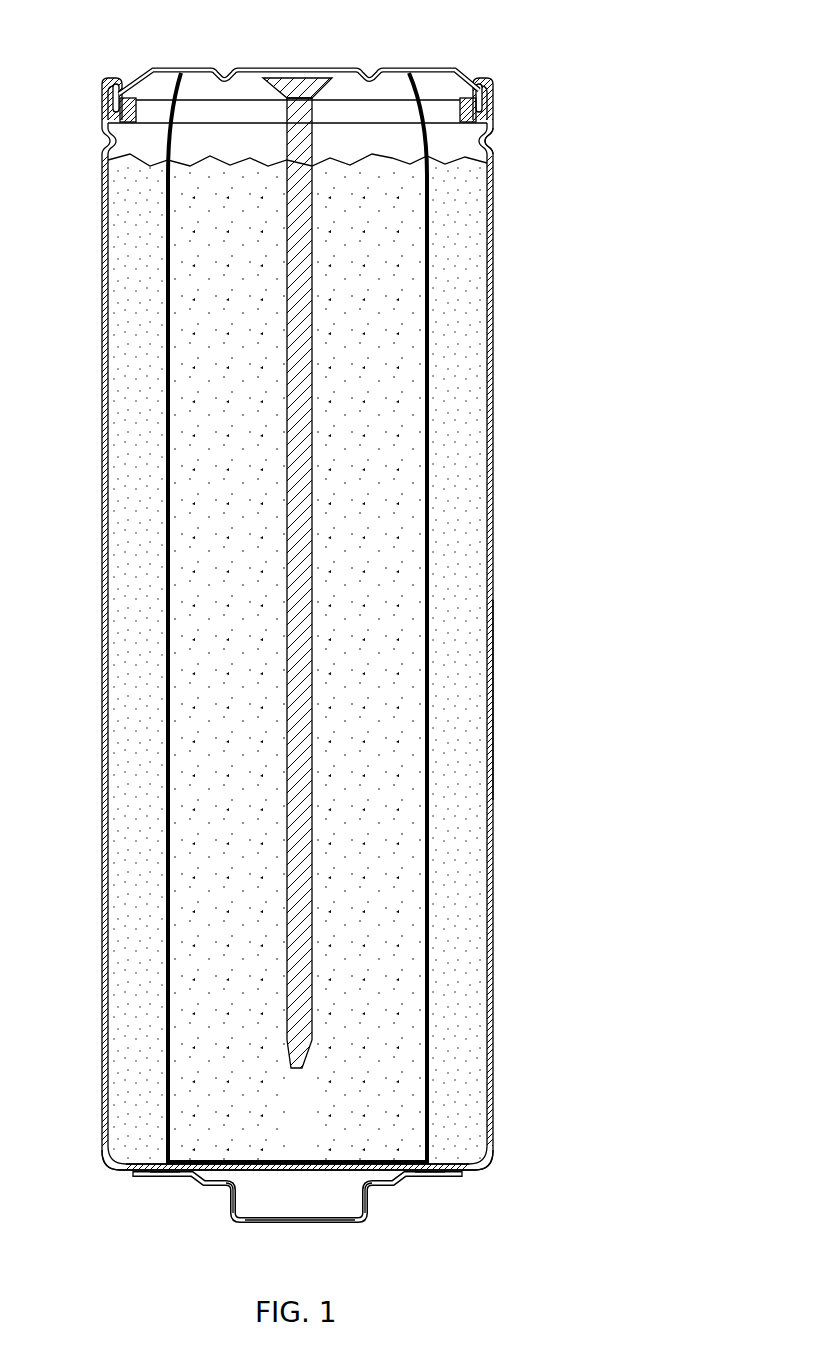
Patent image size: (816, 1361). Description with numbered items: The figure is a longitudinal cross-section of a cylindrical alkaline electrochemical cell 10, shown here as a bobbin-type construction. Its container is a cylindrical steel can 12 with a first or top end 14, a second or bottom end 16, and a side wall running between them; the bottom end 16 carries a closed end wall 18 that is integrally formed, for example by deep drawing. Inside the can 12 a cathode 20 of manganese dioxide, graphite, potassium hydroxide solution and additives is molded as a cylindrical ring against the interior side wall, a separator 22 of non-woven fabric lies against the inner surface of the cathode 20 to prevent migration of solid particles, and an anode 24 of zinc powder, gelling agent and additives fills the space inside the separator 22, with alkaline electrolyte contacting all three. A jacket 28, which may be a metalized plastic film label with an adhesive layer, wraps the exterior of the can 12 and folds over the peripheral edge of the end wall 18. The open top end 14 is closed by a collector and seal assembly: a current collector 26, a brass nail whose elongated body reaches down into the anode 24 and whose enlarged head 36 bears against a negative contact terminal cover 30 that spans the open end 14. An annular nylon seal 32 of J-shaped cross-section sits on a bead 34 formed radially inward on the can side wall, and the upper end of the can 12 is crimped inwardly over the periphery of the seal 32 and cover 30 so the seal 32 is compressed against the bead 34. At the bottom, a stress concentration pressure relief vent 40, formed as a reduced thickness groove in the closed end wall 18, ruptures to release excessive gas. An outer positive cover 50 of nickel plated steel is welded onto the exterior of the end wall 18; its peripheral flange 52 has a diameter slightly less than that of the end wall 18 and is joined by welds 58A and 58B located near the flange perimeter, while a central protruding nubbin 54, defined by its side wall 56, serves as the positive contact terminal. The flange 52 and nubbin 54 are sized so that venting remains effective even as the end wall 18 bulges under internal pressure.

The electrochemical cell 10 is at (578, 31).
The steel can 12 is at (493, 265).
The top end 14 is at (106, 78).
The bottom end 16 is at (103, 1163).
The closed end wall 18 is at (191, 1173).
The cathode 20 is at (468, 302).
The separator 22 is at (430, 355).
The anode 24 is at (390, 452).
The current collector 26 is at (310, 592).
The jacket 28 is at (494, 690).
The negative contact terminal 30 is at (345, 68).
The seal 32 is at (488, 103).
The bead 34 is at (494, 142).
The current collector head 36 is at (296, 76).
The pressure relief vent mechanism 40 is at (257, 1181).
The positive contact terminal cover 50 is at (371, 1232).
The peripheral flange 52 is at (140, 1178).
The nubbin 54 is at (335, 1228).
The step wall 56 is at (227, 1197).
The weld 58A is at (165, 1177).
The weld 58B is at (432, 1177).